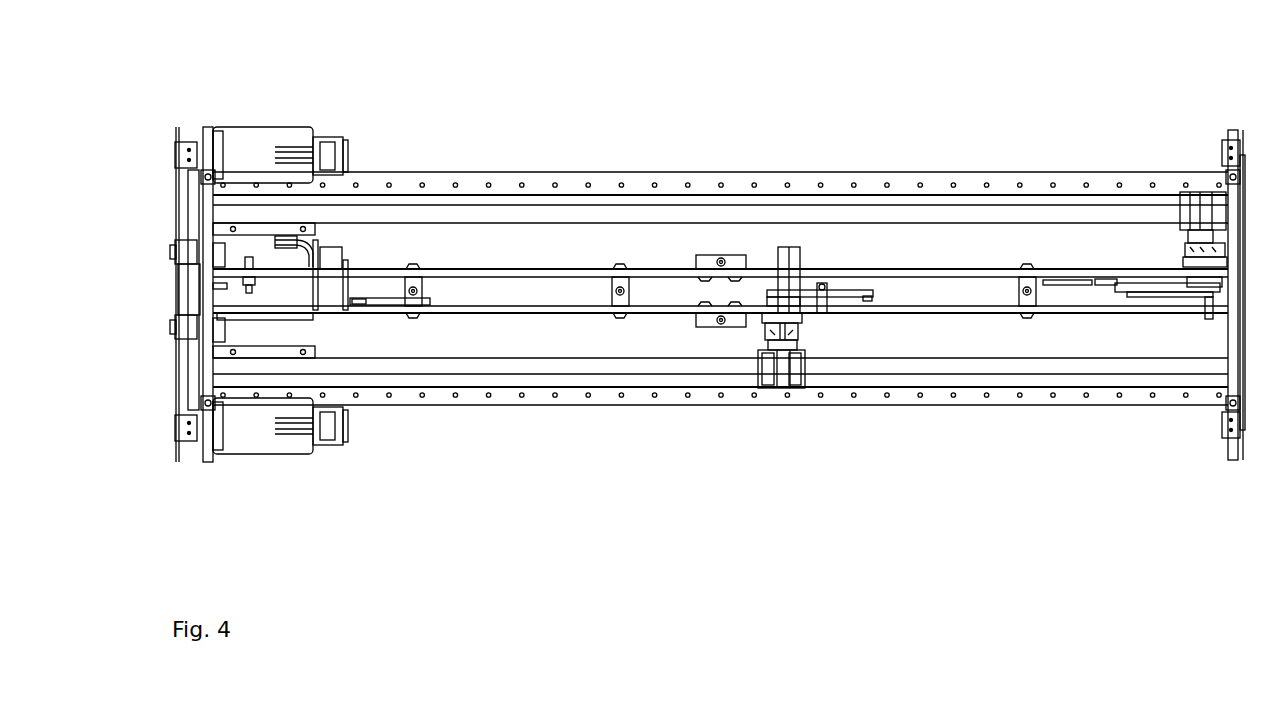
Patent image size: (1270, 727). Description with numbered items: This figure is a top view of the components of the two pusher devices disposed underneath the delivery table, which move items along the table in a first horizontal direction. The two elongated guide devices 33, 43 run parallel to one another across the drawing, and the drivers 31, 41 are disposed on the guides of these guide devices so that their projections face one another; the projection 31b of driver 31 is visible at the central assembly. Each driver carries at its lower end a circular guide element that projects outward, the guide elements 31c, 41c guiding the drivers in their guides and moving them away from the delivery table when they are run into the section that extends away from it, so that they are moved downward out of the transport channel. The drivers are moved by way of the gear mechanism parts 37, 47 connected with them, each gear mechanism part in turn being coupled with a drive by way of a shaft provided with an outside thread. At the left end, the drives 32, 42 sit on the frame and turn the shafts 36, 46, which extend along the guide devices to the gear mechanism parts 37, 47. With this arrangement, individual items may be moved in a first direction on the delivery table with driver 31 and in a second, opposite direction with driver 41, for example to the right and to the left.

The driver 31 is at (835, 303).
The projection 31b is at (867, 300).
The circular guide element 31c is at (785, 298).
The drive 32 is at (250, 435).
The guide device 33 is at (570, 313).
The shaft 36 is at (375, 370).
The gear mechanism part 37 is at (783, 383).
The driver 41 is at (1157, 270).
The circular guide element 41c is at (1118, 282).
The drive 42 is at (253, 155).
The guide device 43 is at (542, 270).
The shaft 46 is at (360, 212).
The gear mechanism part 47 is at (1200, 207).